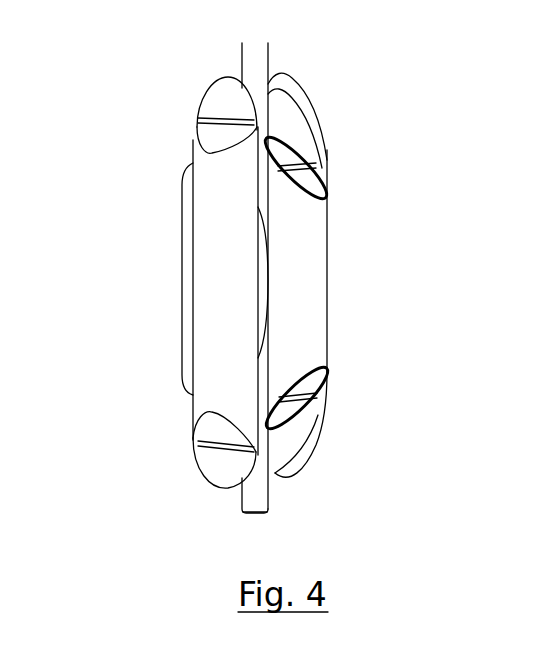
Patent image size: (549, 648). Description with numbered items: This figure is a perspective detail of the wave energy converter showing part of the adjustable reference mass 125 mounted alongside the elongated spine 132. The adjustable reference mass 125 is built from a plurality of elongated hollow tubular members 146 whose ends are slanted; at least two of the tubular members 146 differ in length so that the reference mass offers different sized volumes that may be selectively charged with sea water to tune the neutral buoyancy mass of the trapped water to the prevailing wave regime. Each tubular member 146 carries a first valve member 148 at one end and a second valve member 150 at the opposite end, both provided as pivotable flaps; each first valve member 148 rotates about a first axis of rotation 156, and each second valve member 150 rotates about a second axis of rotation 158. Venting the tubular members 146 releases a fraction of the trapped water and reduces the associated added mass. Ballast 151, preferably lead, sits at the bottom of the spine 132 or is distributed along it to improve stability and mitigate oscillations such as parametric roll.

The adjustable reference mass 125 is at (303, 283).
The elongated spine 132 is at (257, 62).
The elongated hollow tubular member 146 is at (213, 245).
The first valve member 148 is at (223, 97).
The second valve member 150 is at (223, 469).
The ballast 151 is at (262, 497).
The first axis of rotation 156 is at (203, 115).
The second axis of rotation 158 is at (200, 440).